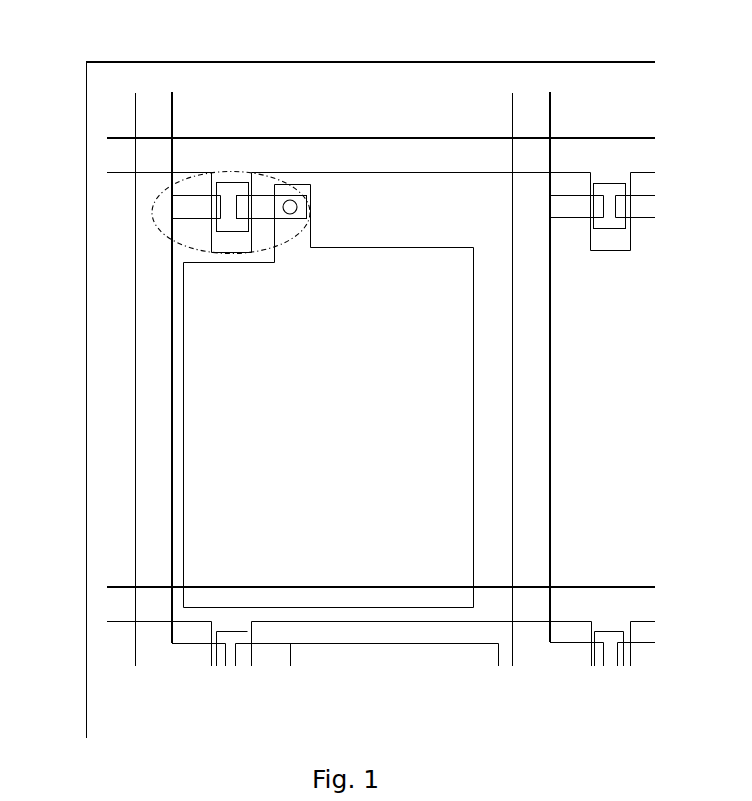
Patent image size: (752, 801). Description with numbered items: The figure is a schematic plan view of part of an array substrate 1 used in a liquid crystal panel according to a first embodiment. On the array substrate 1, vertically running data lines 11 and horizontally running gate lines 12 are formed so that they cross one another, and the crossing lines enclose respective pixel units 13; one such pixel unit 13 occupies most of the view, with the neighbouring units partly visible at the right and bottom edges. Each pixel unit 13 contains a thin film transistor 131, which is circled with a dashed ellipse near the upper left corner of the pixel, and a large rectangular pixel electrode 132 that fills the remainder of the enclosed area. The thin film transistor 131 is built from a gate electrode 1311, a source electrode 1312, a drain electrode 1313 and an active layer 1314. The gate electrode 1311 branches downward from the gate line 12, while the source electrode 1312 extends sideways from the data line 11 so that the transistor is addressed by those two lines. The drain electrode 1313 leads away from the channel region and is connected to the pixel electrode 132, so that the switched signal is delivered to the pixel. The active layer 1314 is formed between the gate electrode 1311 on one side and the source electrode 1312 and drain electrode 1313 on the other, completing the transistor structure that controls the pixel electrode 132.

The array substrate 1 is at (186, 62).
The data line 11 is at (143, 358).
The gate line 12 is at (333, 157).
The pixel unit 13 is at (262, 382).
The thin film transistor 131 is at (222, 218).
The gate electrode 1311 is at (233, 243).
The source electrode 1312 is at (180, 208).
The drain electrode 1313 is at (258, 212).
The active layer 1314 is at (237, 197).
The pixel electrode 132 is at (352, 563).